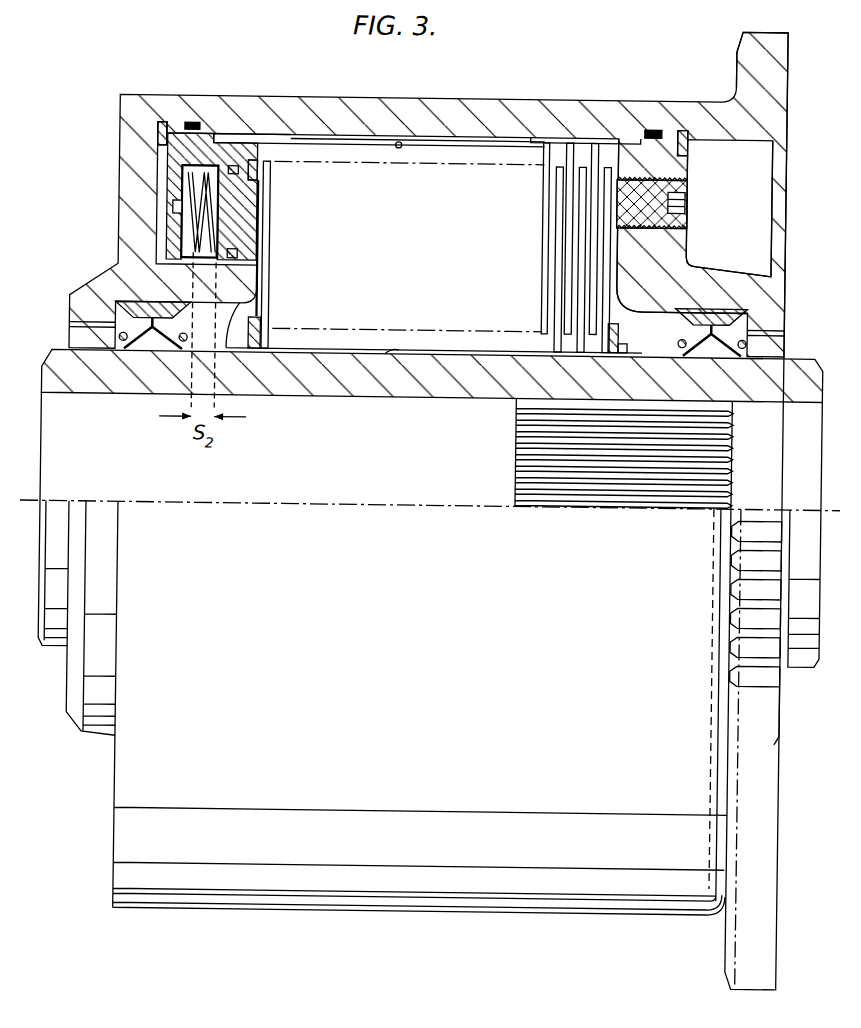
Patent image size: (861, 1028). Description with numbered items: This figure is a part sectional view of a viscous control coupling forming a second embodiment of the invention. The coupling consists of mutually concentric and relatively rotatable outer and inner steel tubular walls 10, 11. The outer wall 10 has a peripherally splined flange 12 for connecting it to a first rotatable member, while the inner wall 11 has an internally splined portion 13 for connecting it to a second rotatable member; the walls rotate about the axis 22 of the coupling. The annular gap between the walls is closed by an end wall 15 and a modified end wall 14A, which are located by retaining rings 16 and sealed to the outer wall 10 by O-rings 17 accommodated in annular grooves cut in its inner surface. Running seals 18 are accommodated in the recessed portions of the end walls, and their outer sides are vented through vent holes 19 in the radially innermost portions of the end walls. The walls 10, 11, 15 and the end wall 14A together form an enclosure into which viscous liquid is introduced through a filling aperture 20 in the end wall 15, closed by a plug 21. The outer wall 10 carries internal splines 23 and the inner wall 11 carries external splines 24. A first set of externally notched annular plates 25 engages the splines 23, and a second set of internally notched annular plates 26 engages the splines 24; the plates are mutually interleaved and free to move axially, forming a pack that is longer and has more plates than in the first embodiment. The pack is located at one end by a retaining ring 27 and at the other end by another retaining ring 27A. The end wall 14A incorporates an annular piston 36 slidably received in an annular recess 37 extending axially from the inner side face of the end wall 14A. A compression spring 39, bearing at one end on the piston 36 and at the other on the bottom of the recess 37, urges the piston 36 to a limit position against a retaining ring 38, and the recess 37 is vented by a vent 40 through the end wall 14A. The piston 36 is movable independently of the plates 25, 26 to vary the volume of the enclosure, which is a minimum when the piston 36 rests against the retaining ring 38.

The outer tubular wall 10 is at (470, 77).
The inner tubular wall 11 is at (338, 383).
The peripherally splined flange 12 is at (782, 70).
The internally splined portion 13 is at (735, 447).
The modified end wall 14A is at (173, 195).
The end wall 15 is at (677, 256).
The retaining ring 16 is at (681, 122).
The O-ring 17 is at (190, 120).
The running seal 18 is at (152, 333).
The vent hole 19 is at (86, 320).
The filling aperture 20 is at (655, 232).
The plug 21 is at (683, 212).
The axis of the coupling 22 is at (455, 499).
The internal spline 23 is at (398, 137).
The external spline 24 is at (383, 352).
The first set of annular plates 25 is at (542, 136).
The second set of annular plates 26 is at (560, 315).
The retaining ring 27 is at (556, 287).
The retaining ring 27A is at (256, 317).
The annular piston 36 is at (266, 158).
The annular recess 37 is at (200, 163).
The retaining ring 38 is at (250, 157).
The compression spring 39 is at (190, 228).
The vent 40 is at (169, 205).